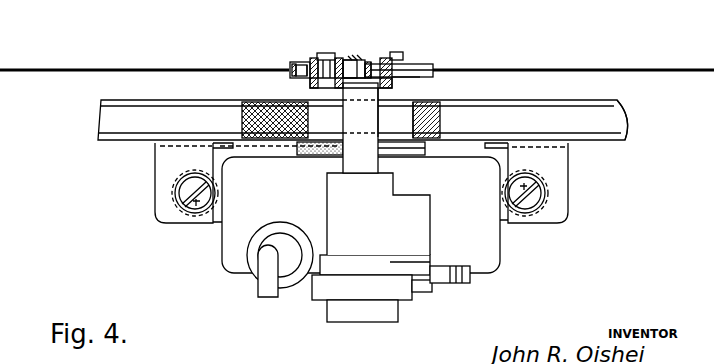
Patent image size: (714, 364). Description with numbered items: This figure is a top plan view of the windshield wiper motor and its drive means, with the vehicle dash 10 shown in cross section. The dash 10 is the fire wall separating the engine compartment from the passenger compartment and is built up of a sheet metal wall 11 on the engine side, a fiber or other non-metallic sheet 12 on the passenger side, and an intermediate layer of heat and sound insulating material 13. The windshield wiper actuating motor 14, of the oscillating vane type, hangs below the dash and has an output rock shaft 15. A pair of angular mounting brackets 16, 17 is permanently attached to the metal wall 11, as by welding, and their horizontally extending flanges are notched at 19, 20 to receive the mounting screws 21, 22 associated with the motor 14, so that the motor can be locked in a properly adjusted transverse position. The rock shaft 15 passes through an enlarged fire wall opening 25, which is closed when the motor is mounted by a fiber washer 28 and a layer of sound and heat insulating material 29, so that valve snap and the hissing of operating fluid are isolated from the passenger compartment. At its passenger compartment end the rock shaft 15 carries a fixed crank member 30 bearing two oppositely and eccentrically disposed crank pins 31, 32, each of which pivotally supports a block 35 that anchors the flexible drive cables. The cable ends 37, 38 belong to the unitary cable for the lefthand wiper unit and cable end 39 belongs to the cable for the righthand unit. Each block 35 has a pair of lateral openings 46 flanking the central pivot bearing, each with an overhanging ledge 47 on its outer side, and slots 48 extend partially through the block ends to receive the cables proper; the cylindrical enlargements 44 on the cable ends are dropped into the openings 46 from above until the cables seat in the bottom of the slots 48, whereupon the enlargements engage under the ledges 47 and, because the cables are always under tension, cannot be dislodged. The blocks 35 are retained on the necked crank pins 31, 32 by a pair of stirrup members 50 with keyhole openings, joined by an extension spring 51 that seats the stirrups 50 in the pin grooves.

The dash 10 is at (96, 121).
The sheet metal wall 11 is at (628, 141).
The non-metallic sheet 12 is at (519, 101).
The heat and sound insulating material 13 is at (564, 118).
The windshield wiper actuating motor 14 is at (492, 280).
The output rock shaft 15 is at (366, 166).
The angular mounting bracket 16 is at (160, 172).
The angular mounting bracket 17 is at (567, 186).
The notch 19 is at (199, 206).
The notch 20 is at (525, 206).
The mounting screw 21 is at (176, 206).
The mounting screw 22 is at (546, 206).
The fire wall opening 25 is at (441, 125).
The fiber washer 28 is at (418, 155).
The sound and heat insulating material 29 is at (298, 151).
The crank member 30 is at (310, 84).
The crank pin 31 is at (325, 91).
The crank pin 32 is at (395, 113).
The block 35 is at (433, 64).
The drive cable end 37 is at (428, 76).
The drive cable end 38 is at (656, 69).
The drive cable end 39 is at (112, 68).
The cylindrical enlargement 44 is at (306, 64).
The lateral opening 46 is at (329, 59).
The overhanging ledge 47 is at (300, 66).
The slot 48 is at (294, 64).
The stirrup member 50 is at (360, 116).
The extension spring 51 is at (352, 59).